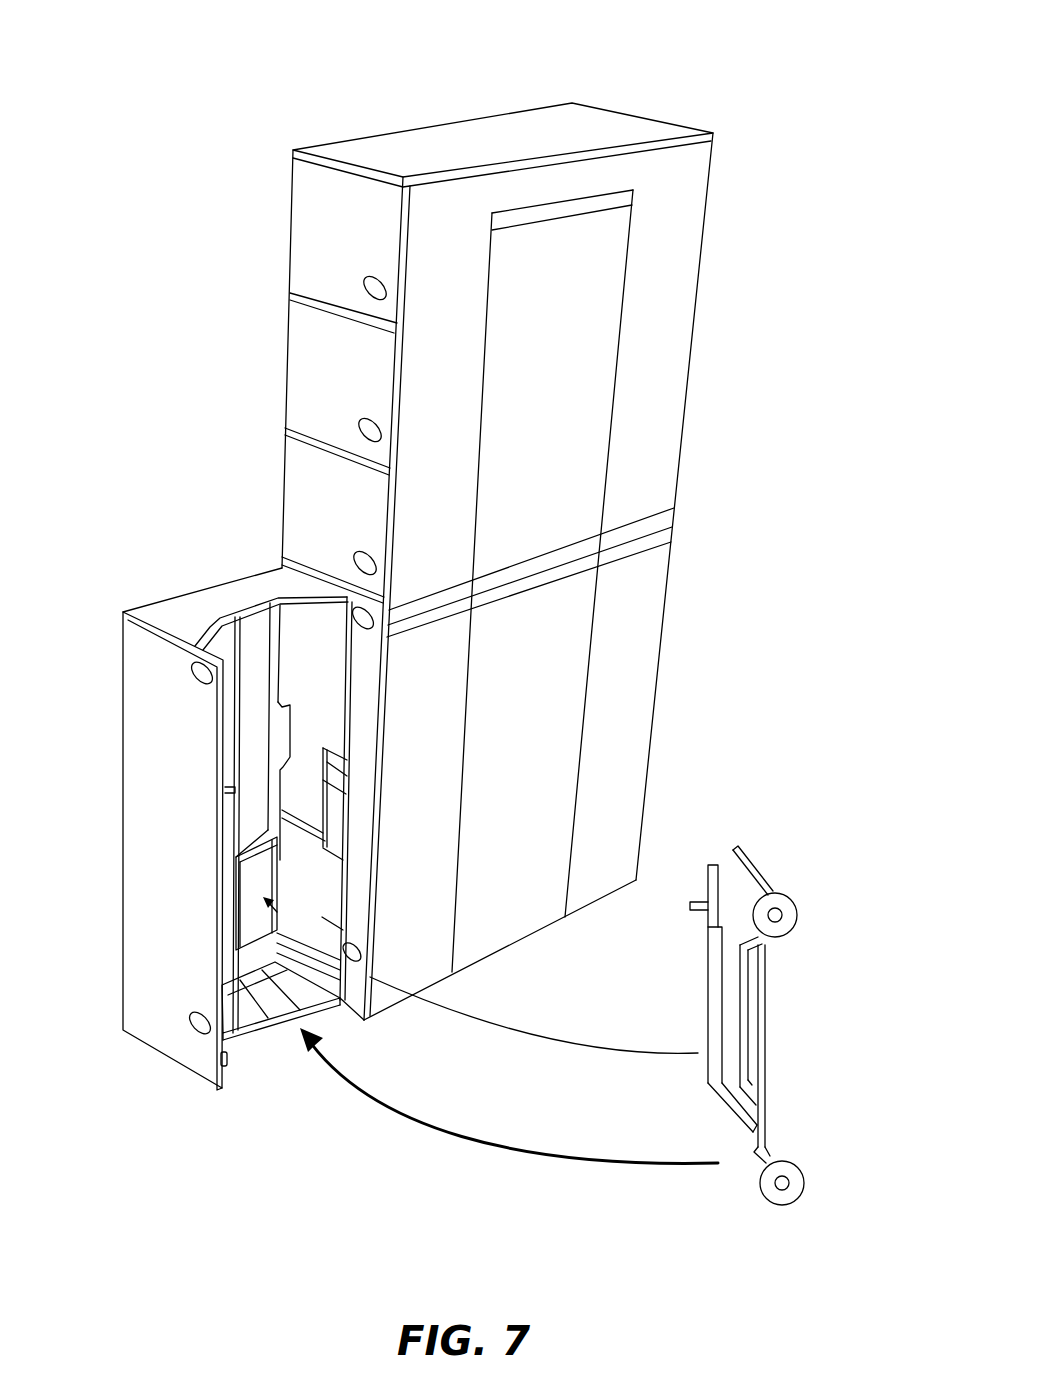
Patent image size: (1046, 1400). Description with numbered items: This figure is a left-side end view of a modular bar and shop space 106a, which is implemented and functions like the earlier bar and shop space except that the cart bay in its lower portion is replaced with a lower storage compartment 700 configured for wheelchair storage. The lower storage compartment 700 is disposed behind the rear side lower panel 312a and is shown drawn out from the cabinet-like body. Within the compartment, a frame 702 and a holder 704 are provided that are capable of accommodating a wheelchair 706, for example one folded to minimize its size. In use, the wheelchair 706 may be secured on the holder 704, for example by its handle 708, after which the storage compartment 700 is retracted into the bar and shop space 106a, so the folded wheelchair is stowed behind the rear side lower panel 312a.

The bar and shop space 106a is at (134, 78).
The lower storage compartment 700 is at (192, 464).
The frame 702 is at (190, 627).
The holder 704 is at (263, 737).
The rear side lower panel 312a is at (430, 793).
The wheelchair 706 is at (784, 905).
The handle 708 is at (693, 902).